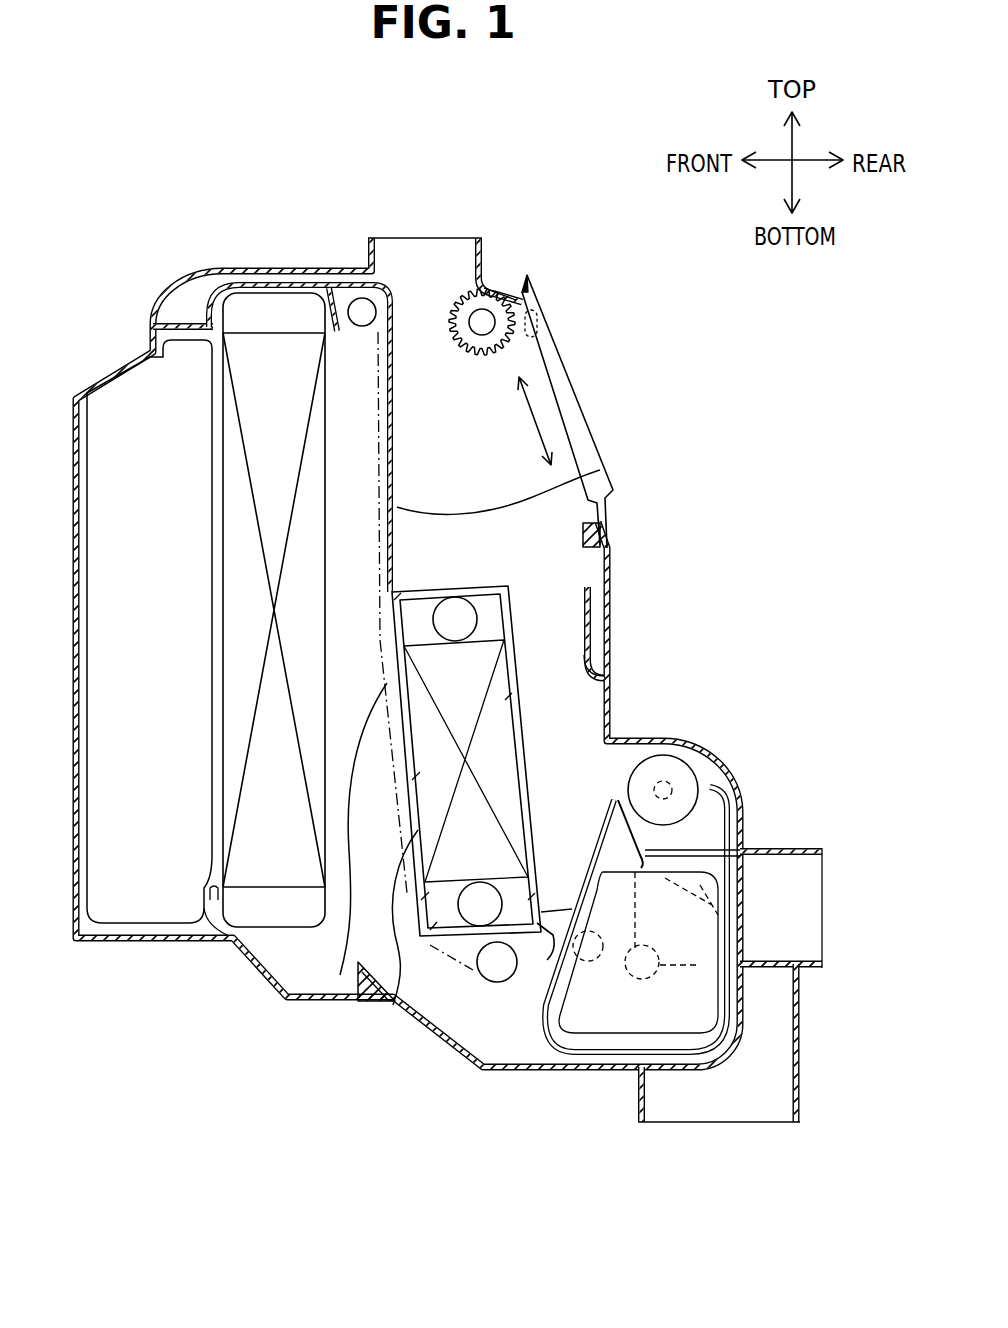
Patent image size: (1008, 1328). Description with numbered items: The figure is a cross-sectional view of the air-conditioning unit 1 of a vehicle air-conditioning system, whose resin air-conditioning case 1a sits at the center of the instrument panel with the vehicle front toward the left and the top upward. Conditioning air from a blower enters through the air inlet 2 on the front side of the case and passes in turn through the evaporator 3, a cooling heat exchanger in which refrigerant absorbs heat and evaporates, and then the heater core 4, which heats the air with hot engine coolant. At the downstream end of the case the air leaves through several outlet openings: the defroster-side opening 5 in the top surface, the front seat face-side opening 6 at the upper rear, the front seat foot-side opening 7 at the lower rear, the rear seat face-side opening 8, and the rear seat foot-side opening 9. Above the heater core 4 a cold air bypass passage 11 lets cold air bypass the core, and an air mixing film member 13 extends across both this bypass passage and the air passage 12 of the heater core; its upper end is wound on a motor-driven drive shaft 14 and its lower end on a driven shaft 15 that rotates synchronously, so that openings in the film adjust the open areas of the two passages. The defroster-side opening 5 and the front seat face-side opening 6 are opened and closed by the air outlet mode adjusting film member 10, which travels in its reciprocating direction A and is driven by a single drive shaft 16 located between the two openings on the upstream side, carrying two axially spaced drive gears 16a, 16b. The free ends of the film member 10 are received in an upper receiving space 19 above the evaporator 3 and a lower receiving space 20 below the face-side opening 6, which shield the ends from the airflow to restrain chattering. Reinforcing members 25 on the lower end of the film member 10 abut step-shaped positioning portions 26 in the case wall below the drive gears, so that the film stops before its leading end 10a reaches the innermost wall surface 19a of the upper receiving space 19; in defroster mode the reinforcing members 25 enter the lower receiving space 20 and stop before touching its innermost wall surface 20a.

The air-conditioning unit 1 is at (287, 260).
The air-conditioning case 1a is at (217, 267).
The air inlet 2 is at (87, 480).
The evaporator 3 is at (273, 400).
The heater core 4 is at (465, 680).
The defroster-side opening 5 is at (390, 248).
The front seat face-side opening 6 is at (583, 450).
The front seat foot-side opening 7 is at (590, 1017).
The rear seat face-side opening 8 is at (813, 908).
The rear seat foot-side opening 9 is at (753, 1110).
The air outlet mode adjusting film member 10 is at (537, 370).
The leading end 10a is at (360, 312).
The cold air bypass passage 11 is at (600, 470).
The air passage of the heater core 12 is at (393, 997).
The air mixing film member 13 is at (340, 975).
The drive shaft 14 is at (333, 300).
The driven shaft 15 is at (497, 970).
The drive shaft 16 is at (497, 320).
The drive gear 16a is at (450, 287).
The drive gear 16b is at (500, 294).
The receiving space 19 is at (197, 297).
The innermost wall surface 19a is at (183, 320).
The receiving space 20 is at (592, 600).
The innermost wall surface 20a is at (600, 663).
The reinforcing member 25 is at (603, 527).
The positioning portion 26 is at (547, 317).
The reciprocating direction A is at (547, 407).